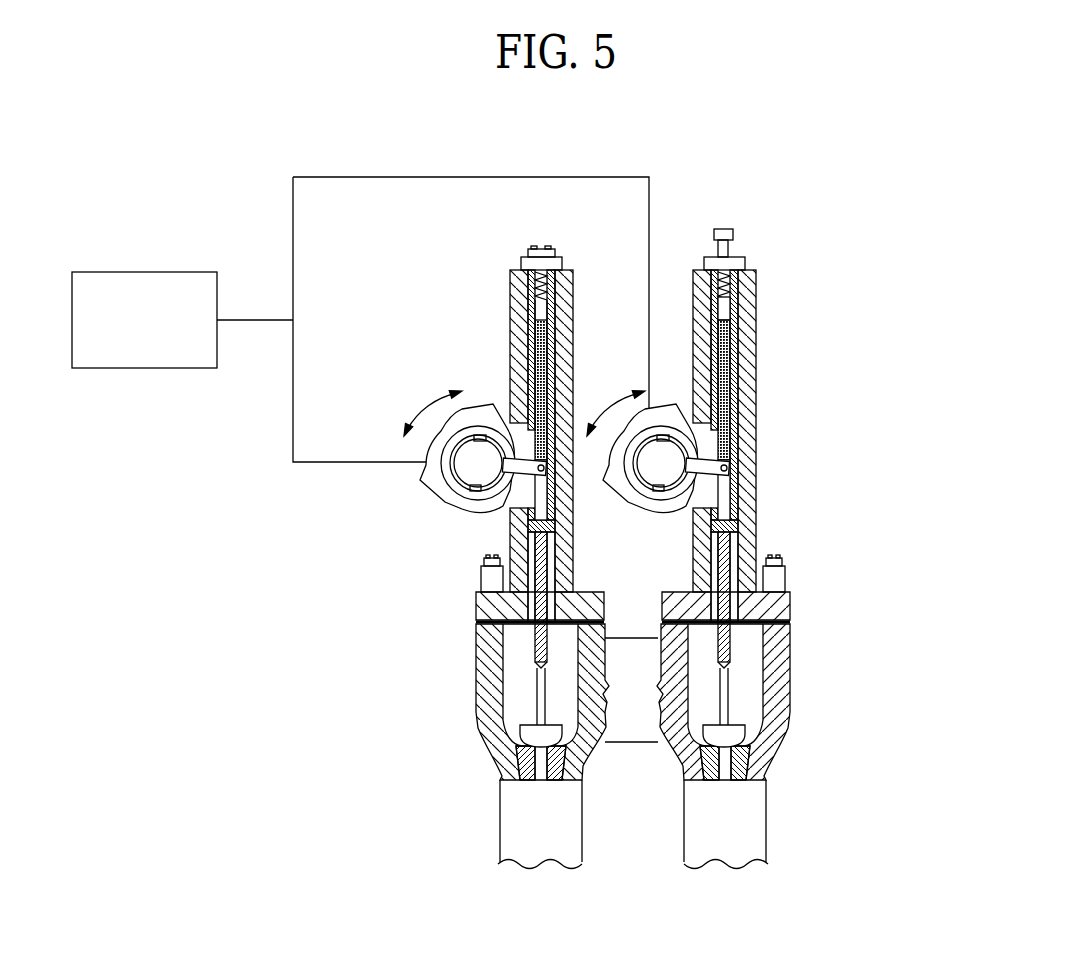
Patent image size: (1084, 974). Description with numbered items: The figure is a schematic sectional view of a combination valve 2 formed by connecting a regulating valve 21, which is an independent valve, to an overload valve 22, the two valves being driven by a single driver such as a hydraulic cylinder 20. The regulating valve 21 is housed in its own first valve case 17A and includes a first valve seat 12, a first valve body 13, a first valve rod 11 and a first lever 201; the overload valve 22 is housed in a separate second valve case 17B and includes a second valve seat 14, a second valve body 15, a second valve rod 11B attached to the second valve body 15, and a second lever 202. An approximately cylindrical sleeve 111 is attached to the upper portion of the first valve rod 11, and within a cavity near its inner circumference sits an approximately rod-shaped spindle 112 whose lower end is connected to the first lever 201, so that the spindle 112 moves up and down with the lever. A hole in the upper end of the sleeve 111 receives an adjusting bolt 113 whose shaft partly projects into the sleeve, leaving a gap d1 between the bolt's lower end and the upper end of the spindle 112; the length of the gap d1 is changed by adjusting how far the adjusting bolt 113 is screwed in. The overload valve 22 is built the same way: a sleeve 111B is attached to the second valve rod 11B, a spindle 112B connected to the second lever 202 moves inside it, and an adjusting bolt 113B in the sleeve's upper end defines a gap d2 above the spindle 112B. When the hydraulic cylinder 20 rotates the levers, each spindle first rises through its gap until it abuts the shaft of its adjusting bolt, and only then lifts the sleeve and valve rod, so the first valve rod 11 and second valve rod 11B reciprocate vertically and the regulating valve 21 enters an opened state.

The combination valve 2 is at (610, 523).
The hydraulic cylinder 20 is at (143, 272).
The regulating valve 21 is at (488, 538).
The overload valve 22 is at (757, 530).
The first valve rod 11 is at (535, 652).
The second valve rod 11B is at (732, 645).
The first valve seat 12 is at (497, 770).
The first valve body 13 is at (520, 742).
The second valve seat 14 is at (750, 757).
The second valve body 15 is at (745, 728).
The first valve case 17A is at (478, 679).
The second valve case 17B is at (782, 690).
The sleeve 111 is at (530, 335).
The sleeve 111B is at (738, 298).
The spindle 112 is at (547, 357).
The spindle 112B is at (730, 385).
The adjusting bolt 113 is at (541, 250).
The adjusting bolt 113B is at (733, 236).
The first lever 201 is at (447, 502).
The second lever 202 is at (632, 502).
The gap d1 is at (538, 315).
The gap d2 is at (731, 308).